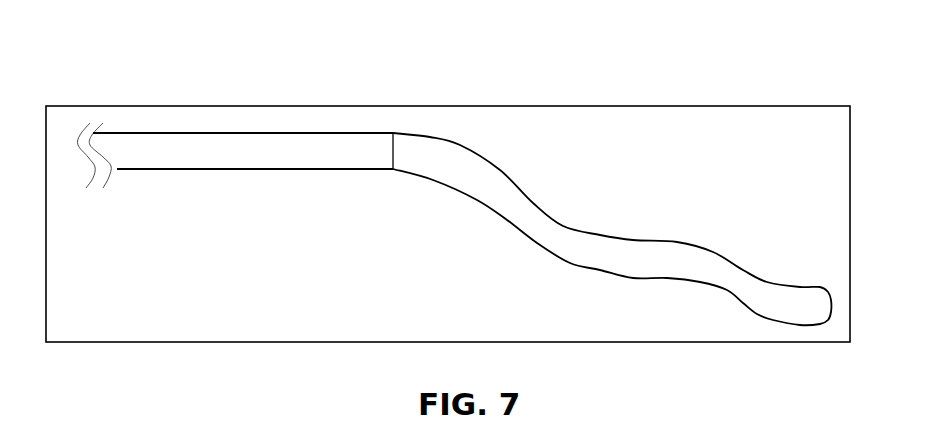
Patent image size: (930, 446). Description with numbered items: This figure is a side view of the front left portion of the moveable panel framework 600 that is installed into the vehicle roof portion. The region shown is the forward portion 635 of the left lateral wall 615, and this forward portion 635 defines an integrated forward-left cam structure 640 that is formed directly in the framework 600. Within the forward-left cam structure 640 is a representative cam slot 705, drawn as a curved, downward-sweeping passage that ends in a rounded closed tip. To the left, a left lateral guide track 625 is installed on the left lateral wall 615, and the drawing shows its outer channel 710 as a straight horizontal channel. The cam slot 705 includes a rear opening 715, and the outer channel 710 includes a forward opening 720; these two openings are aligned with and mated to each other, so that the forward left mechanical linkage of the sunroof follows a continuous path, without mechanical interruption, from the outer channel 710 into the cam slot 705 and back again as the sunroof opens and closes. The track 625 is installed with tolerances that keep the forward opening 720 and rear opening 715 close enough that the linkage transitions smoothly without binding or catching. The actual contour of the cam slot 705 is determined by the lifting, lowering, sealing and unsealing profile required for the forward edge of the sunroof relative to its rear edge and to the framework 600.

The moveable panel framework 600 is at (715, 75).
The left lateral wall 615 is at (273, 286).
The left lateral guide track 625 is at (193, 133).
The forward portion of wall 635 is at (656, 196).
The forward-left cam structure 640 is at (722, 254).
The cam slot 705 is at (560, 233).
The outer channel 710 is at (255, 162).
The rear opening 715 is at (414, 158).
The forward opening 720 is at (373, 155).